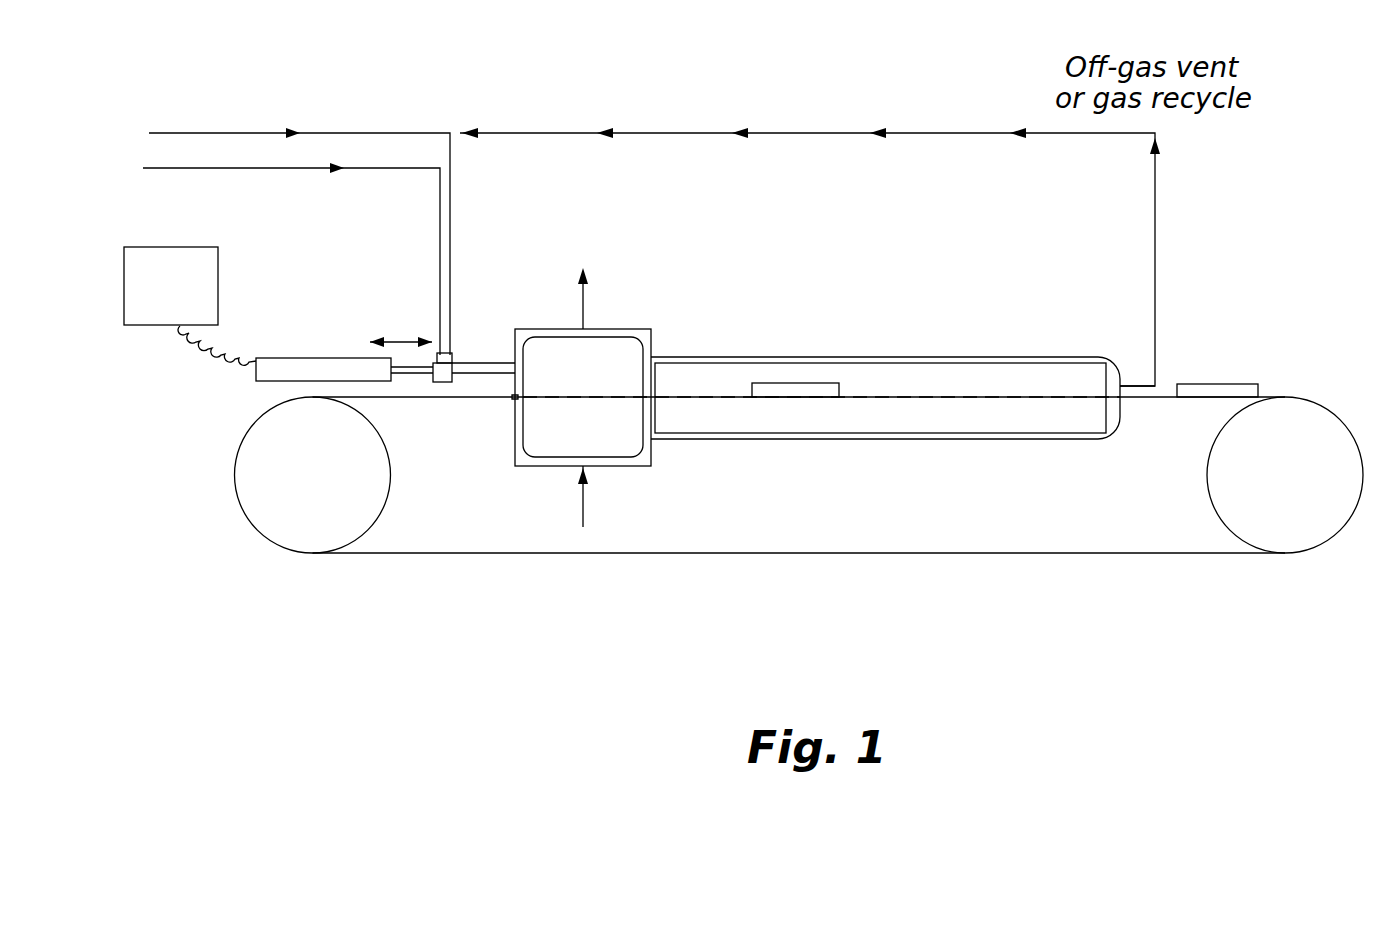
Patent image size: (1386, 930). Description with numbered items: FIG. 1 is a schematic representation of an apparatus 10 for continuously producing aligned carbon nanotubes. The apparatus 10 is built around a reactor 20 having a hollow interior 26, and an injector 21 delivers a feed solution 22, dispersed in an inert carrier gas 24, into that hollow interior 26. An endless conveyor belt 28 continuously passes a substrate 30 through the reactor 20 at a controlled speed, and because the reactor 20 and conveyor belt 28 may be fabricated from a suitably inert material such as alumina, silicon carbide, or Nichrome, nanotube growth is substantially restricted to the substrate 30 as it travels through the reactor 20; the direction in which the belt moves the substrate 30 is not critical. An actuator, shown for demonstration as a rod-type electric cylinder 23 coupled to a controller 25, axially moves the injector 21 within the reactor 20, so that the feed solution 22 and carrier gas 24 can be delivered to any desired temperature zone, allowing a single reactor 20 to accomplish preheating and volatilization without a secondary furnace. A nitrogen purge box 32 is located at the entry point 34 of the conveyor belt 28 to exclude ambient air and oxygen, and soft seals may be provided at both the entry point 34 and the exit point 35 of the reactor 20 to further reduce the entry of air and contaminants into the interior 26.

The apparatus 10 is at (666, 92).
The reactor 20 is at (905, 356).
The injector 21 is at (483, 362).
The feed solution 22 is at (299, 226).
The rod-type electric cylinder 23 is at (325, 357).
The inert carrier gas 24 is at (297, 248).
The controller 25 is at (190, 299).
The hollow interior 26 is at (994, 364).
The endless conveyor belt 28 is at (1297, 396).
The substrate 30 is at (768, 390).
The nitrogen purge box 32 is at (636, 330).
The entry point 34 is at (508, 405).
The exit point 35 is at (1132, 372).